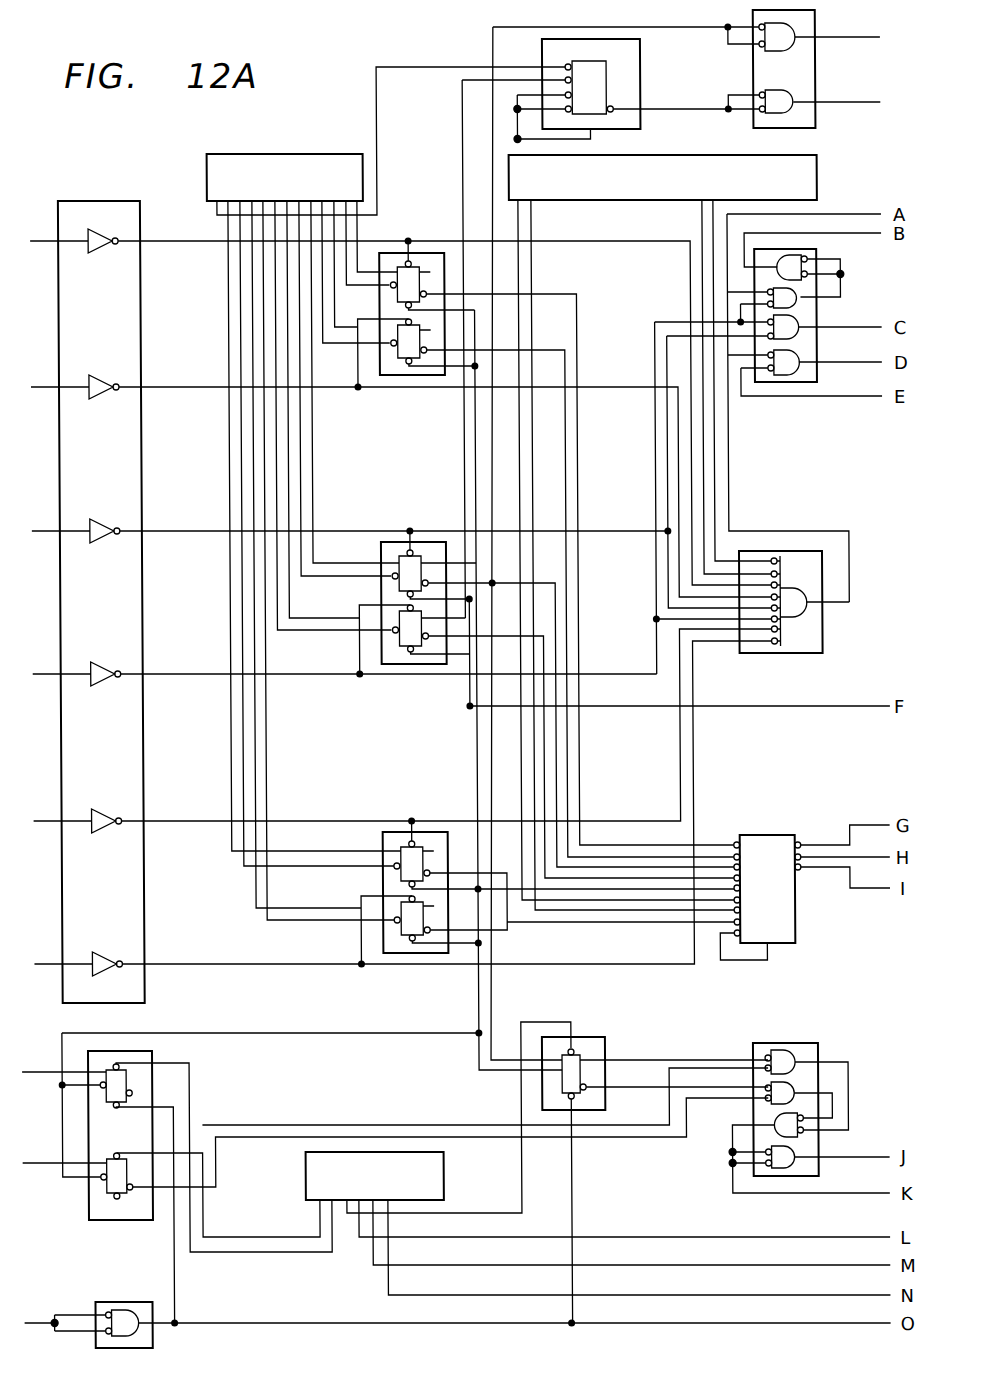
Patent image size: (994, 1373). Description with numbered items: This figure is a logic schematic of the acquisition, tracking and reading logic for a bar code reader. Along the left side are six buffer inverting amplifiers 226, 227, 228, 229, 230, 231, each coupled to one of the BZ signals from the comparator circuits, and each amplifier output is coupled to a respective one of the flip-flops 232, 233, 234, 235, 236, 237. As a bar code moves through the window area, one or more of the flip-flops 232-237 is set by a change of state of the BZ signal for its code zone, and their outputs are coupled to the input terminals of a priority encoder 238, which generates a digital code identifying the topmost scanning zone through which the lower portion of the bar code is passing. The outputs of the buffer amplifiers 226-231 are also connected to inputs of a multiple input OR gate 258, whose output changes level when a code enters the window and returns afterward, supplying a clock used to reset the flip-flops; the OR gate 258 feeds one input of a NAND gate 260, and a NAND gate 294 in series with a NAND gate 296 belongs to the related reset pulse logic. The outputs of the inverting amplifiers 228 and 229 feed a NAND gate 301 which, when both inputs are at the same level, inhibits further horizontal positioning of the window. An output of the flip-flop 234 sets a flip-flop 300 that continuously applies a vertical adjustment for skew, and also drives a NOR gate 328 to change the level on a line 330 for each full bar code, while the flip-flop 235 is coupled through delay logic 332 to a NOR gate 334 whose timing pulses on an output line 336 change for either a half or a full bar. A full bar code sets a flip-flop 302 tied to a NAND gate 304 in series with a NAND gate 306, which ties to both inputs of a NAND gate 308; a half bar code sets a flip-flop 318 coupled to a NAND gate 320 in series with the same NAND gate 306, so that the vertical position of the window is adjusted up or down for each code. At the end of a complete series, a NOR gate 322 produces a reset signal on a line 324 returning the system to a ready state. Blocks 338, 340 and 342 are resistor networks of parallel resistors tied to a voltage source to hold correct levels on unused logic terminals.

The buffer inverting amplifier 226 is at (114, 250).
The buffer inverting amplifier 227 is at (114, 384).
The buffer inverting amplifier 228 is at (114, 524).
The buffer inverting amplifier 229 is at (114, 667).
The buffer inverting amplifier 230 is at (114, 812).
The buffer inverting amplifier 231 is at (114, 955).
The flip-flop 232 is at (412, 275).
The flip-flop 233 is at (404, 345).
The flip-flop 234 is at (412, 570).
The flip-flop 235 is at (404, 640).
The flip-flop 236 is at (416, 860).
The flip-flop 237 is at (410, 925).
The priority encoder 238 is at (805, 892).
The multiple input OR gate 258 is at (792, 656).
The NAND gate 260 is at (795, 372).
The NAND gate 294 is at (794, 304).
The NAND gate 296 is at (796, 265).
The flip-flop 300 is at (570, 1080).
The NAND gate 301 is at (795, 333).
The flip-flop 302 is at (107, 1092).
The NAND gate 304 is at (778, 1060).
The NAND gate 306 is at (781, 1120).
The NAND gate 308 is at (785, 1163).
The flip-flop 318 is at (107, 1186).
The NAND gate 320 is at (785, 1097).
The NOR gate 322 is at (118, 1318).
The line 324 is at (148, 1327).
The NOR gate 328 is at (778, 47).
The line 330 is at (876, 35).
The delay logic 332 is at (600, 86).
The NOR gate 334 is at (778, 111).
The output line 336 is at (876, 100).
The register 338 is at (285, 177).
The resistor network 340 is at (663, 177).
The resistor network 342 is at (375, 1176).